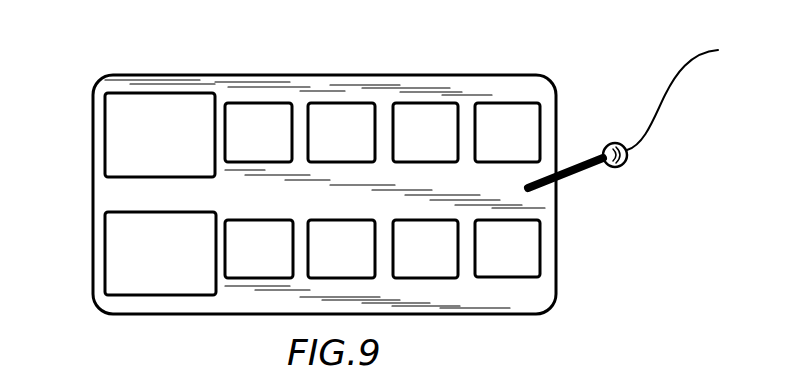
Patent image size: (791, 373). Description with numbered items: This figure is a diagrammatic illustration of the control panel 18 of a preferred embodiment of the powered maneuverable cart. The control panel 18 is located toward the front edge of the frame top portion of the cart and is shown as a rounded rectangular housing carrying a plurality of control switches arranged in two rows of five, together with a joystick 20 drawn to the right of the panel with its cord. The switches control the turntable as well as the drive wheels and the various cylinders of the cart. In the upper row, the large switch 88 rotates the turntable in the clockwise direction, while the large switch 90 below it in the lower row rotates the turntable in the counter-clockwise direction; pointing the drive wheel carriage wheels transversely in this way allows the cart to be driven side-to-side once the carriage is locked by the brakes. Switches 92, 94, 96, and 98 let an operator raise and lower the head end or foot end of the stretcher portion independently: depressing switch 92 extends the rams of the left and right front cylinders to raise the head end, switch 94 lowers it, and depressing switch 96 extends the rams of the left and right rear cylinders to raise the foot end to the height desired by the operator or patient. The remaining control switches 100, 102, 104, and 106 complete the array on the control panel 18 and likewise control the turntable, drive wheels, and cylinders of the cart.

The control panel 18 is at (472, 195).
The joystick 20 is at (642, 112).
The switch 88 is at (163, 128).
The switch 90 is at (123, 248).
The switch 92 is at (252, 122).
The switch 94 is at (253, 260).
The switch 96 is at (348, 117).
The switch 98 is at (327, 267).
The control switch 100 is at (428, 122).
The control switch 102 is at (427, 262).
The control switch 104 is at (510, 117).
The control switch 106 is at (525, 262).